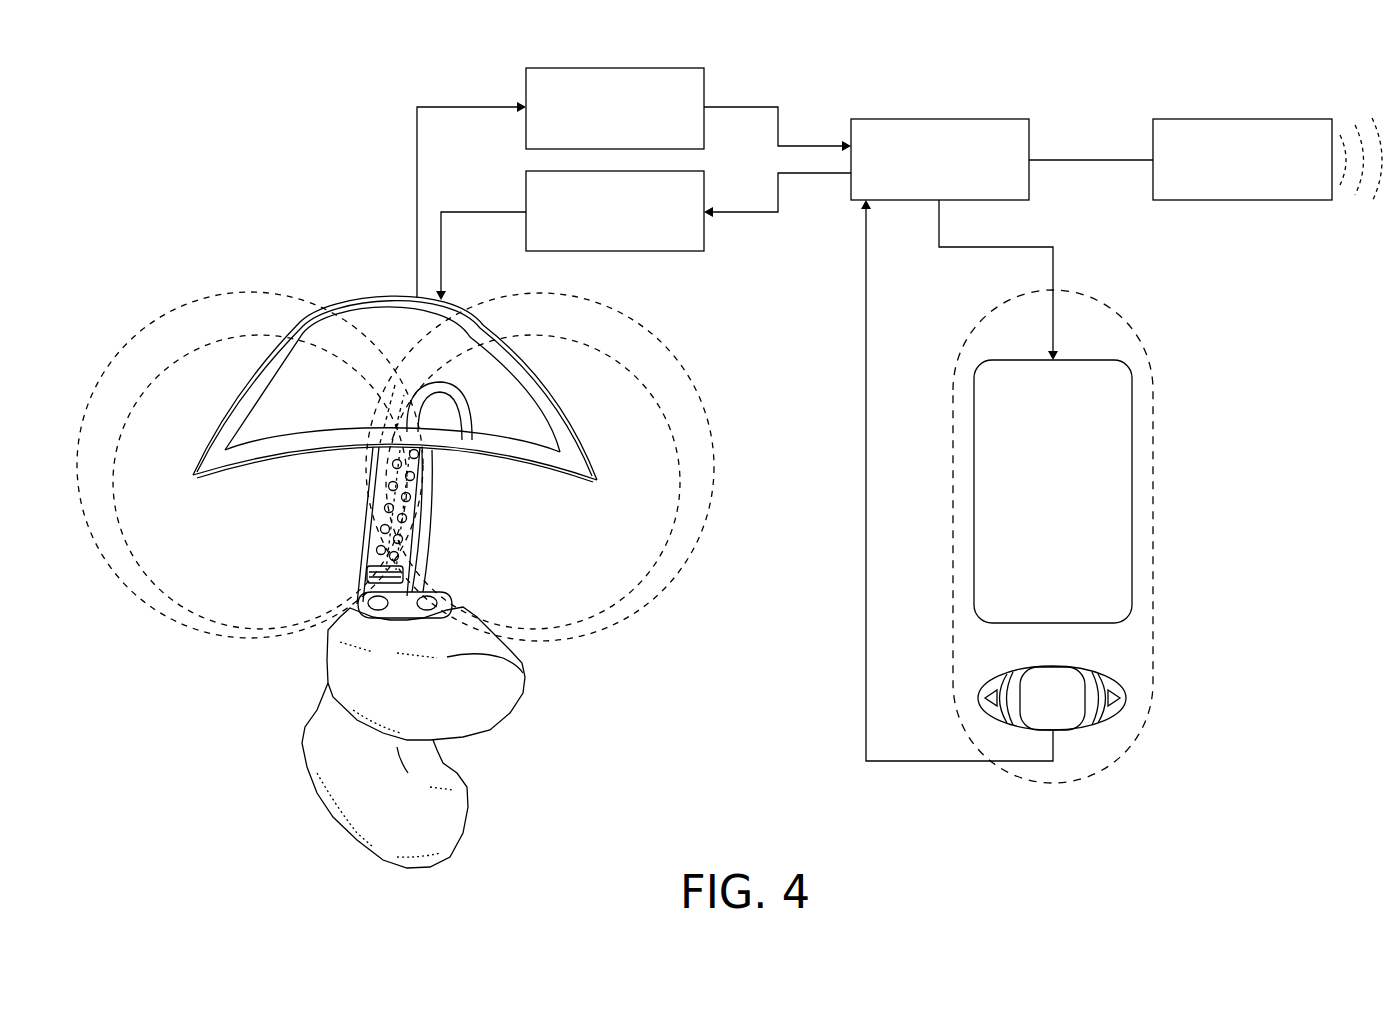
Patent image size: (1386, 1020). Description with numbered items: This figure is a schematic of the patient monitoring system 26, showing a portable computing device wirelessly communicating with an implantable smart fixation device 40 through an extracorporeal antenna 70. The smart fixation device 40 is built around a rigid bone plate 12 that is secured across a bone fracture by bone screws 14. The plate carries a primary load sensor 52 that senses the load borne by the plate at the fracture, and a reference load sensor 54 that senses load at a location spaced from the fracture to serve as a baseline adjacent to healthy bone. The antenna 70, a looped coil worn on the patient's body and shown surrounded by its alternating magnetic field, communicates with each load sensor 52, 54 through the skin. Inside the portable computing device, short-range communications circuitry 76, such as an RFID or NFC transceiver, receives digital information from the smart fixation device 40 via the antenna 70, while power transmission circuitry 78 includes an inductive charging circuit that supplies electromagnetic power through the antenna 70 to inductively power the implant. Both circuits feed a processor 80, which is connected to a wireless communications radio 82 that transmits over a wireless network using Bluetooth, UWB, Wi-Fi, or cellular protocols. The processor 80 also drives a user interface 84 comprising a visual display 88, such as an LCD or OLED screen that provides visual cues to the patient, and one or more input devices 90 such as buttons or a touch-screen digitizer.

The patient monitoring system 26 is at (178, 160).
The antenna 70 is at (365, 297).
The short-range communications circuitry 76 is at (618, 68).
The power transmission circuitry 78 is at (613, 251).
The processor 80 is at (941, 119).
The wireless communications radio 82 is at (1243, 119).
The user interface 84 is at (1163, 396).
The visual display 88 is at (1123, 485).
The input devices 90 is at (1077, 668).
The implantable smart fixation device 40 is at (358, 497).
The bone plate 12 is at (362, 562).
The bone screws 14 is at (370, 602).
The primary load sensor 52 is at (430, 466).
The reference load sensor 54 is at (408, 578).